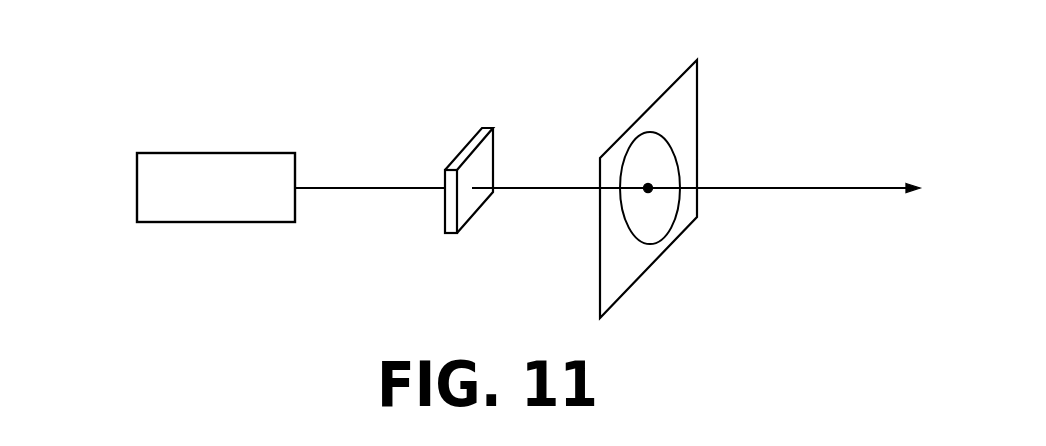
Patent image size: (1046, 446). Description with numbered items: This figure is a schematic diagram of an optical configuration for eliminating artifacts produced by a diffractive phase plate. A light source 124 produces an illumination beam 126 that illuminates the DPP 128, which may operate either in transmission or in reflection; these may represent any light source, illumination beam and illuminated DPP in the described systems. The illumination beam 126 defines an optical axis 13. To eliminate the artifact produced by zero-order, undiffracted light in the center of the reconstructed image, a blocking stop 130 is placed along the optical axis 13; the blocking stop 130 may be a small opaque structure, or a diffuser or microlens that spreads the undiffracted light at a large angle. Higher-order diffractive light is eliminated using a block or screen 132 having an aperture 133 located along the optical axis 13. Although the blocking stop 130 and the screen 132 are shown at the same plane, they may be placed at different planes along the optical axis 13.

The light source 124 is at (137, 189).
The illumination beam 126 is at (375, 190).
The DPP 128 is at (457, 155).
The optical axis 13 is at (822, 190).
The block or screen 132 is at (653, 103).
The aperture 133 is at (626, 228).
The blocking stop 130 is at (649, 187).